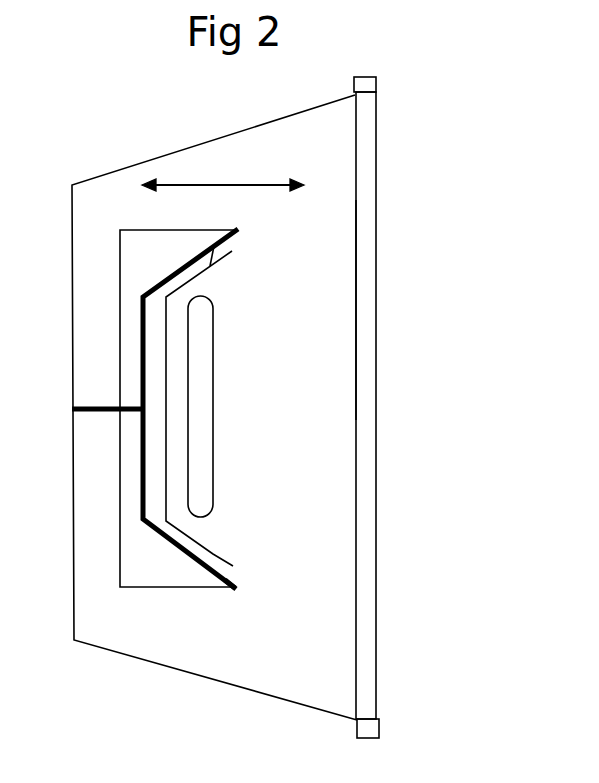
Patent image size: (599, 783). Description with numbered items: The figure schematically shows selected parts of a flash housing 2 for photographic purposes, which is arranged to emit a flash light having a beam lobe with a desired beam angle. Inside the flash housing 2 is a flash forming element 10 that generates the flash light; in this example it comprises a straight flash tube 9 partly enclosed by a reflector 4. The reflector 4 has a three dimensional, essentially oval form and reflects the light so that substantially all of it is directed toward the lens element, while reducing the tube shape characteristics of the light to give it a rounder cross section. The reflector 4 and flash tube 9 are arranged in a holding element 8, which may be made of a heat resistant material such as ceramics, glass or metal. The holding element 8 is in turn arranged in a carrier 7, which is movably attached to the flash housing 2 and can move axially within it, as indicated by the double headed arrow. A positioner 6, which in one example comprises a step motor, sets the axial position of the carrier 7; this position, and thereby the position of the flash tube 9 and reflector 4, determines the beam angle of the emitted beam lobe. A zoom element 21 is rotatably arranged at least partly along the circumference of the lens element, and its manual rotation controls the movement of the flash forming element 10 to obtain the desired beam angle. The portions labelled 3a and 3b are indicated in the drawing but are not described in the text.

The flash housing 2 is at (172, 150).
The rod 3a is at (392, 367).
The rod portion 3b is at (348, 303).
The reflector 4 is at (188, 278).
The positioner 6 is at (97, 410).
The carrier 7 is at (167, 588).
The holding element 8 is at (233, 588).
The flash tube 9 is at (197, 330).
The flash forming element 10 is at (224, 414).
The zoom element 21 is at (376, 85).